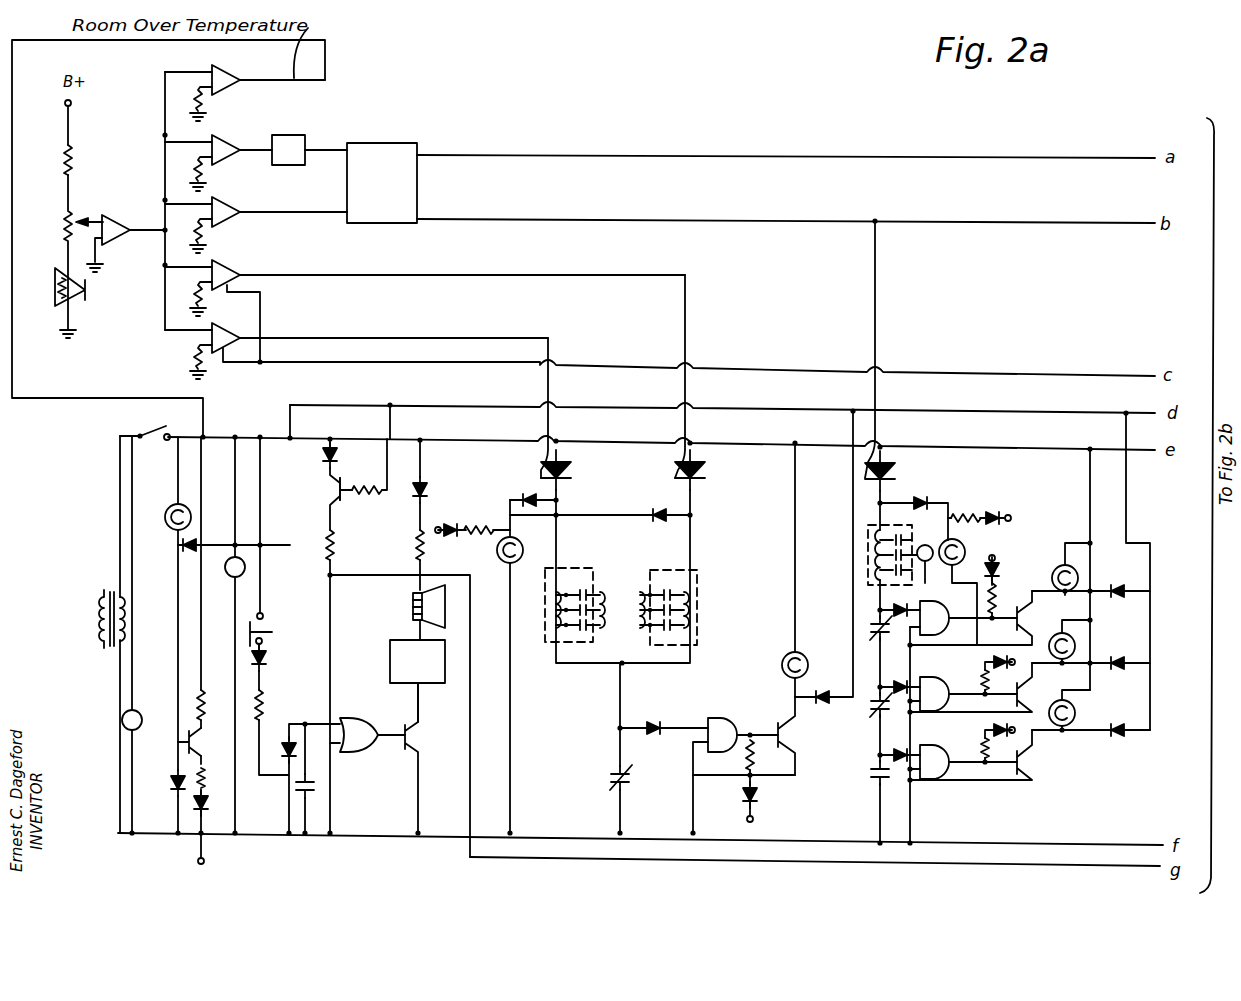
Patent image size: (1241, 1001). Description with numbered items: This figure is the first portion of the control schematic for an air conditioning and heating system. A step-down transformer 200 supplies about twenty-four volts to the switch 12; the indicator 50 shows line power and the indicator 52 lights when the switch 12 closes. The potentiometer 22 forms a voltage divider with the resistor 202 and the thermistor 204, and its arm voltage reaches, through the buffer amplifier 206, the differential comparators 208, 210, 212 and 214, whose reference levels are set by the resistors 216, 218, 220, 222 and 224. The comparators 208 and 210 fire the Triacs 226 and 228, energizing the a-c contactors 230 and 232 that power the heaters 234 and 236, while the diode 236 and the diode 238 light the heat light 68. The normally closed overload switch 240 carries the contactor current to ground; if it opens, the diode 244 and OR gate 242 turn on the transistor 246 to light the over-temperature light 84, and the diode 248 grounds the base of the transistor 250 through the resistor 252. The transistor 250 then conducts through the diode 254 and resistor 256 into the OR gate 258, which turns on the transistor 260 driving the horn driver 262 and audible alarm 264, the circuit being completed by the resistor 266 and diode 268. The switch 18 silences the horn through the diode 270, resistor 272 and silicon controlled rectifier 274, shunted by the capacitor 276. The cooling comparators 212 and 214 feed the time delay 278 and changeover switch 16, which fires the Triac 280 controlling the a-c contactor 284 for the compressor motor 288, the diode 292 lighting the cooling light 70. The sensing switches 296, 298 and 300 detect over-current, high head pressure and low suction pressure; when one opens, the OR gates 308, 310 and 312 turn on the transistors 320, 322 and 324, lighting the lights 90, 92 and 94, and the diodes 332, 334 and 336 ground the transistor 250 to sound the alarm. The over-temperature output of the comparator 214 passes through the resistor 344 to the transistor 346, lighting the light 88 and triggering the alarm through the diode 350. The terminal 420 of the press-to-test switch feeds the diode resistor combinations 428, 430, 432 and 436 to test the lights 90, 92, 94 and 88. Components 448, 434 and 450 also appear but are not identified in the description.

The resistor 202 is at (66, 168).
The potentiometer 22 is at (66, 228).
The buffer amplifier 206 is at (114, 220).
The temperature-sensitive resistor 204 is at (80, 295).
The differential comparator 214 is at (244, 85).
The resistor 224 is at (206, 104).
The time delay 278 is at (289, 135).
The resistor 222 is at (206, 178).
The differential comparator 212 is at (246, 219).
The resistor 220 is at (206, 238).
The differential comparator 210 is at (246, 272).
The resistor 218 is at (206, 300).
The differential comparator 208 is at (208, 336).
The resistor 216 is at (198, 360).
The changeover switch 16 is at (382, 183).
The switch 12 is at (153, 446).
The room over temperature light 88 is at (166, 512).
The diode 350 is at (185, 550).
The indicator 52 is at (229, 577).
The step-down transformer 200 is at (100, 612).
The switch 18 is at (266, 624).
The diode 270 is at (266, 656).
The resistor 272 is at (265, 697).
The silicon controlled rectifier 274 is at (284, 742).
The capacitor 276 is at (312, 795).
The current limiting resistor 344 is at (196, 696).
The indicator 50 is at (156, 709).
The transistor 346 is at (185, 744).
The diode resistor combination 436 is at (208, 788).
The terminal 420 is at (205, 862).
The OR gate 258 is at (357, 768).
The transistor 260 is at (413, 738).
The horn driver 262 is at (390, 656).
The audible alarm 264 is at (413, 610).
The diode 254 is at (336, 458).
The transistor 250 is at (338, 494).
The resistor 252 is at (367, 506).
The resistor 256 is at (336, 546).
The diode 268 is at (426, 485).
The resistor 266 is at (425, 550).
The diode 448 is at (472, 510).
The heaters 236 is at (527, 498).
The indicator light 68 is at (520, 545).
The Triac 226 is at (572, 471).
The Triac 228 is at (706, 472).
The diode 238 is at (667, 512).
The heaters 234 is at (604, 610).
The a-c contactor 232 is at (700, 643).
The a-c contactor 230 is at (551, 642).
The overload switch 240 is at (612, 780).
The diode 244 is at (656, 722).
The OR gate 242 is at (728, 728).
The transistor 246 is at (776, 724).
The resistor 434 is at (746, 756).
The indicator light 84 is at (786, 678).
The diode 248 is at (820, 697).
The Triac 280 is at (897, 471).
The diode 292 is at (916, 500).
The diode 450 is at (976, 513).
The indicator light 70 is at (965, 552).
The a-c contactor 284 is at (868, 578).
The compressor motor 288 is at (925, 580).
The sensing switch 296 is at (868, 630).
The sensing switch 298 is at (868, 708).
The sensing switch 300 is at (868, 776).
The OR gate 308 is at (948, 618).
The OR gate 310 is at (948, 694).
The OR gate 312 is at (948, 762).
The transistor 320 is at (1012, 629).
The transistor 322 is at (1012, 698).
The transistor 324 is at (1012, 766).
The diode resistor combination 430 is at (982, 678).
The diode resistor combination 432 is at (982, 748).
The diode resistor combination 428 is at (996, 594).
The indicator light 90 is at (1062, 565).
The indicator light 92 is at (1056, 638).
The indicator light 94 is at (1057, 705).
The diode 332 is at (1125, 576).
The diode 334 is at (1119, 656).
The diode 336 is at (1119, 722).